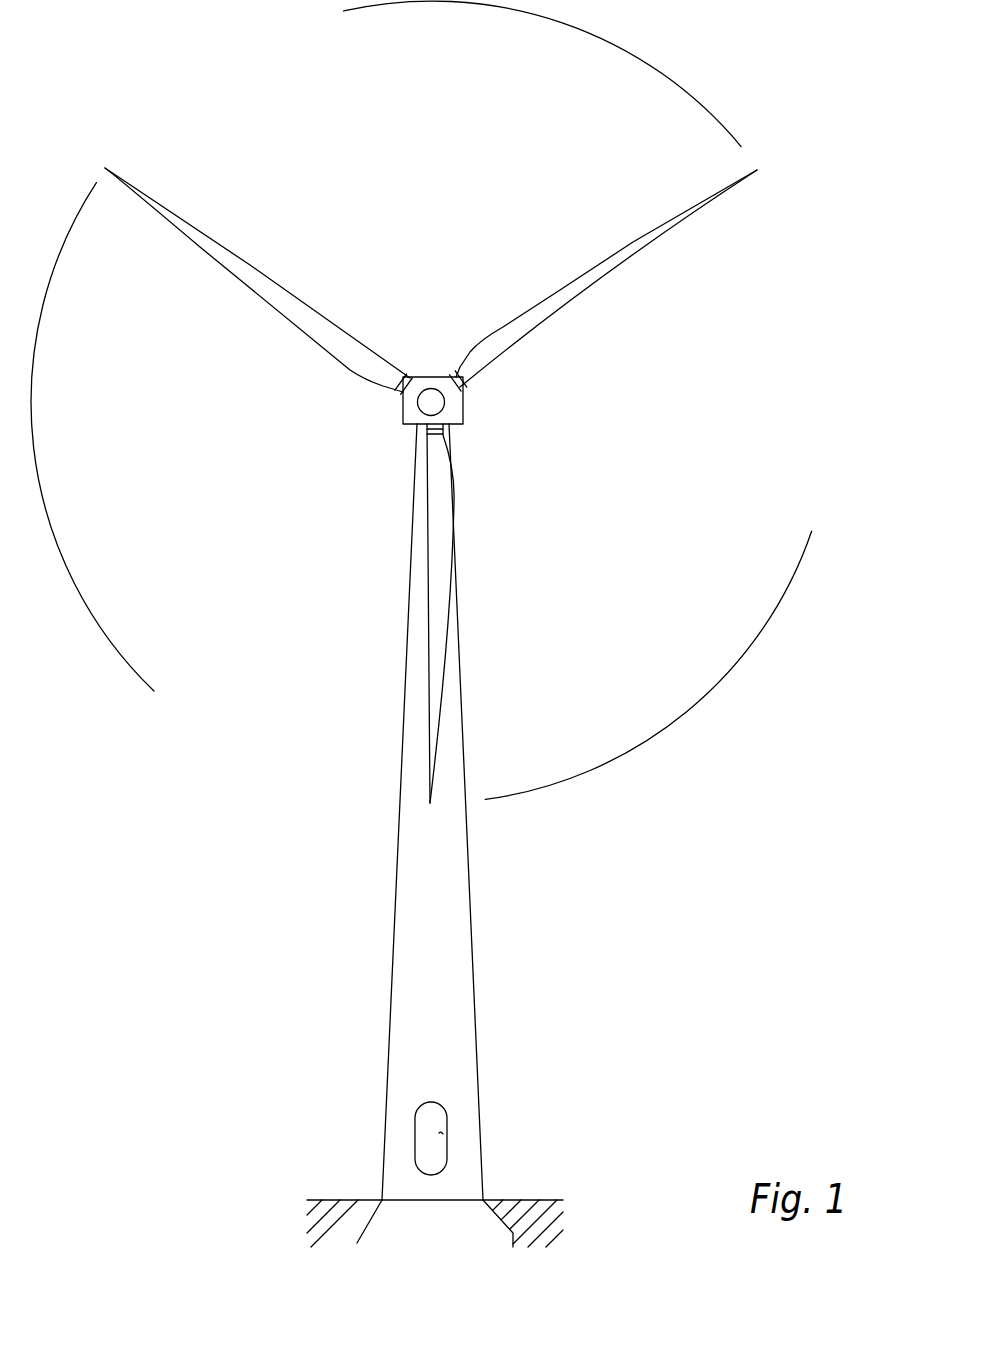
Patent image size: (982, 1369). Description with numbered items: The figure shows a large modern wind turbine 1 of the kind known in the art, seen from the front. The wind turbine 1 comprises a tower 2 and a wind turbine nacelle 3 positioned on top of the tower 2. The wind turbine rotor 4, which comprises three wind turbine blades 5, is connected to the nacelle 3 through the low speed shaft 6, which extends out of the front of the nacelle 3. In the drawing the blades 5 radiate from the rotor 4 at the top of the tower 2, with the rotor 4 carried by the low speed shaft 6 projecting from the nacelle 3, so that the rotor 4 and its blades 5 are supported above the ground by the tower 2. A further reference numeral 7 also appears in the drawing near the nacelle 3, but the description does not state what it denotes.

The wind turbine 1 is at (362, 1023).
The tower 2 is at (462, 893).
The wind turbine nacelle 3 is at (463, 424).
The wind turbine rotor 4 is at (430, 395).
The wind turbine blades 5 is at (435, 653).
The low speed shaft 6 is at (443, 413).
The generator 7 is at (417, 392).